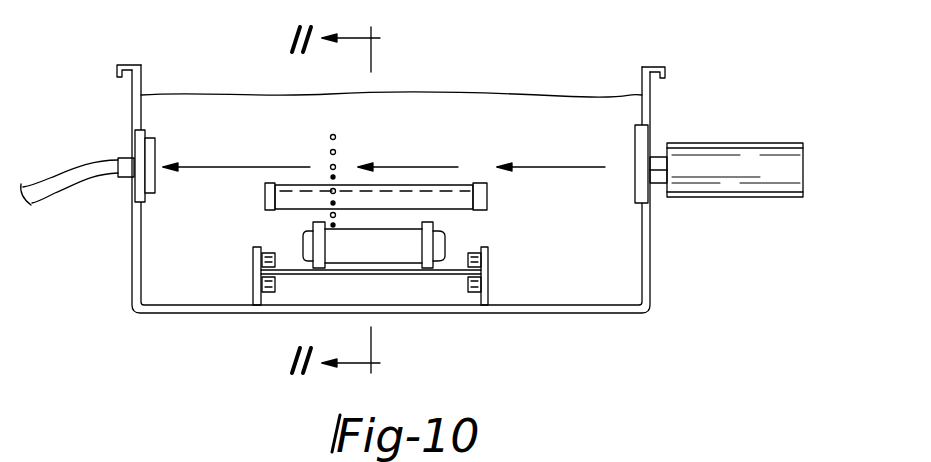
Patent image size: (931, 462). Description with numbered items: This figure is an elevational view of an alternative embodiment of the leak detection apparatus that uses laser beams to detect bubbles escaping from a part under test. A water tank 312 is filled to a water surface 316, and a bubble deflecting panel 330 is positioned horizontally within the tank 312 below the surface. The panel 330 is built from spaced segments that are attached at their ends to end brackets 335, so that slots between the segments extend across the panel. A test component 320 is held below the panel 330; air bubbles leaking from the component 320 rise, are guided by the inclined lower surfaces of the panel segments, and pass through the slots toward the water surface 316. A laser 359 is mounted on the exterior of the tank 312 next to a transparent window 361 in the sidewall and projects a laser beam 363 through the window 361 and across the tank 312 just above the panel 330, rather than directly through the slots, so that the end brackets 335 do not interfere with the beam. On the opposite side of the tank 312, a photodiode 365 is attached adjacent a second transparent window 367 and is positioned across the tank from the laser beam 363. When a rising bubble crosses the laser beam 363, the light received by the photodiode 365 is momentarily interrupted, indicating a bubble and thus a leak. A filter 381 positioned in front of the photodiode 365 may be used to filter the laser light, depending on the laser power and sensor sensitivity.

The water tank 312 is at (655, 107).
The water surface 316 is at (522, 95).
The test component 320 is at (445, 238).
The bubble deflecting panel 330 is at (487, 210).
The end brackets 335 is at (265, 196).
The laser 359 is at (803, 168).
The transparent window 361 is at (643, 193).
The laser beam 363 is at (548, 167).
The photodiode 365 is at (127, 178).
The second transparent window 367 is at (147, 200).
The filter 381 is at (160, 143).